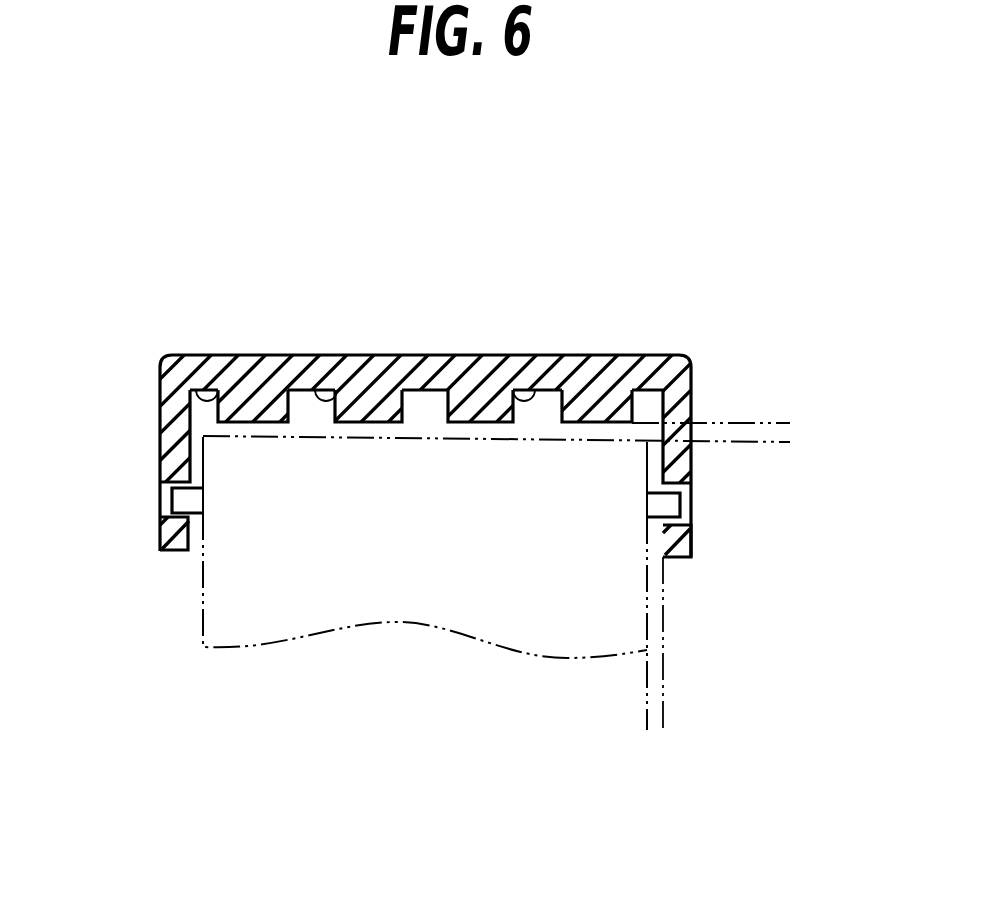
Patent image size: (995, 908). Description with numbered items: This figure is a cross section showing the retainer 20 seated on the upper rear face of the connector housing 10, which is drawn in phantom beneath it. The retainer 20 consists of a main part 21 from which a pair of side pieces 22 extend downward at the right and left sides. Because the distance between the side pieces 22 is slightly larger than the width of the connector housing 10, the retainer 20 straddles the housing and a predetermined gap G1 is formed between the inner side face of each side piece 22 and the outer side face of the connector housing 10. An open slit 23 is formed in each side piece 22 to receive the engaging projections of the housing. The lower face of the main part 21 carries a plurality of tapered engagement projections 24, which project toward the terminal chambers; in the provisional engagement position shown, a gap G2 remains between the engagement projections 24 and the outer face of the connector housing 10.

The connector housing 10 is at (186, 616).
The retainer 20 is at (436, 408).
The main part 21 is at (437, 355).
The side pieces 22 is at (160, 452).
The open slit 23 is at (163, 514).
The engagement projections 24 is at (198, 355).
The gap G1 is at (703, 722).
The gap G2 is at (778, 388).